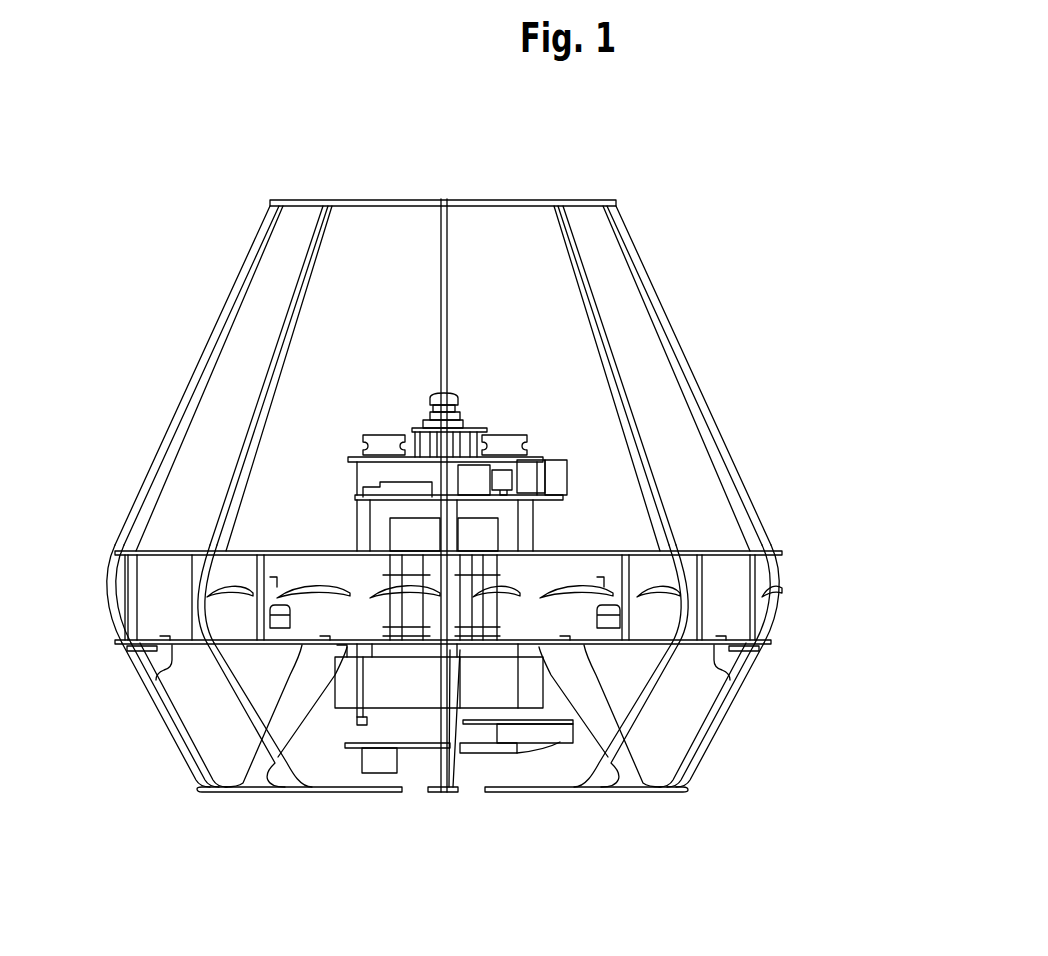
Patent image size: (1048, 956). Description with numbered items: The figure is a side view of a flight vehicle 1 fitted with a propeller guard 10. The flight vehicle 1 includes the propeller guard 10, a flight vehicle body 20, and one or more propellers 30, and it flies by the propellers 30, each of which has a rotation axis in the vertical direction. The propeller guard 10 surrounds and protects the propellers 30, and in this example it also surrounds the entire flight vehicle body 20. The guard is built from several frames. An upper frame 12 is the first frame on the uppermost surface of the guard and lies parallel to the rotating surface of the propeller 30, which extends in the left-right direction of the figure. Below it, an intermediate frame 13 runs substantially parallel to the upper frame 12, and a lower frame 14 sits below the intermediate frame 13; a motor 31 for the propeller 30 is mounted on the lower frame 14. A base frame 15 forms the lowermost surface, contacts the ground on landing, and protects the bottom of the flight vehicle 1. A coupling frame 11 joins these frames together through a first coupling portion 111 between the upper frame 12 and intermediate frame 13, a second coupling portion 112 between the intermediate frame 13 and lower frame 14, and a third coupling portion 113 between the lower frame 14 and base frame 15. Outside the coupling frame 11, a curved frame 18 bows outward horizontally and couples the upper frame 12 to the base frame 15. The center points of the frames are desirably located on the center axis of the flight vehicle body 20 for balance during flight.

The flight vehicle 1 is at (525, 160).
The propeller guard 10 is at (657, 198).
The coupling frame 11 is at (910, 745).
The first coupling portion 111 is at (512, 378).
The second coupling portion 112 is at (760, 596).
The third coupling portion 113 is at (733, 713).
The upper frame 12 is at (405, 200).
The intermediate frame 13 is at (706, 551).
The lower frame 14 is at (697, 644).
The base frame 15 is at (645, 792).
The curved frame 18 is at (654, 281).
The flight vehicle body 20 is at (479, 397).
The propeller 30 is at (312, 588).
The motor 31 is at (290, 623).